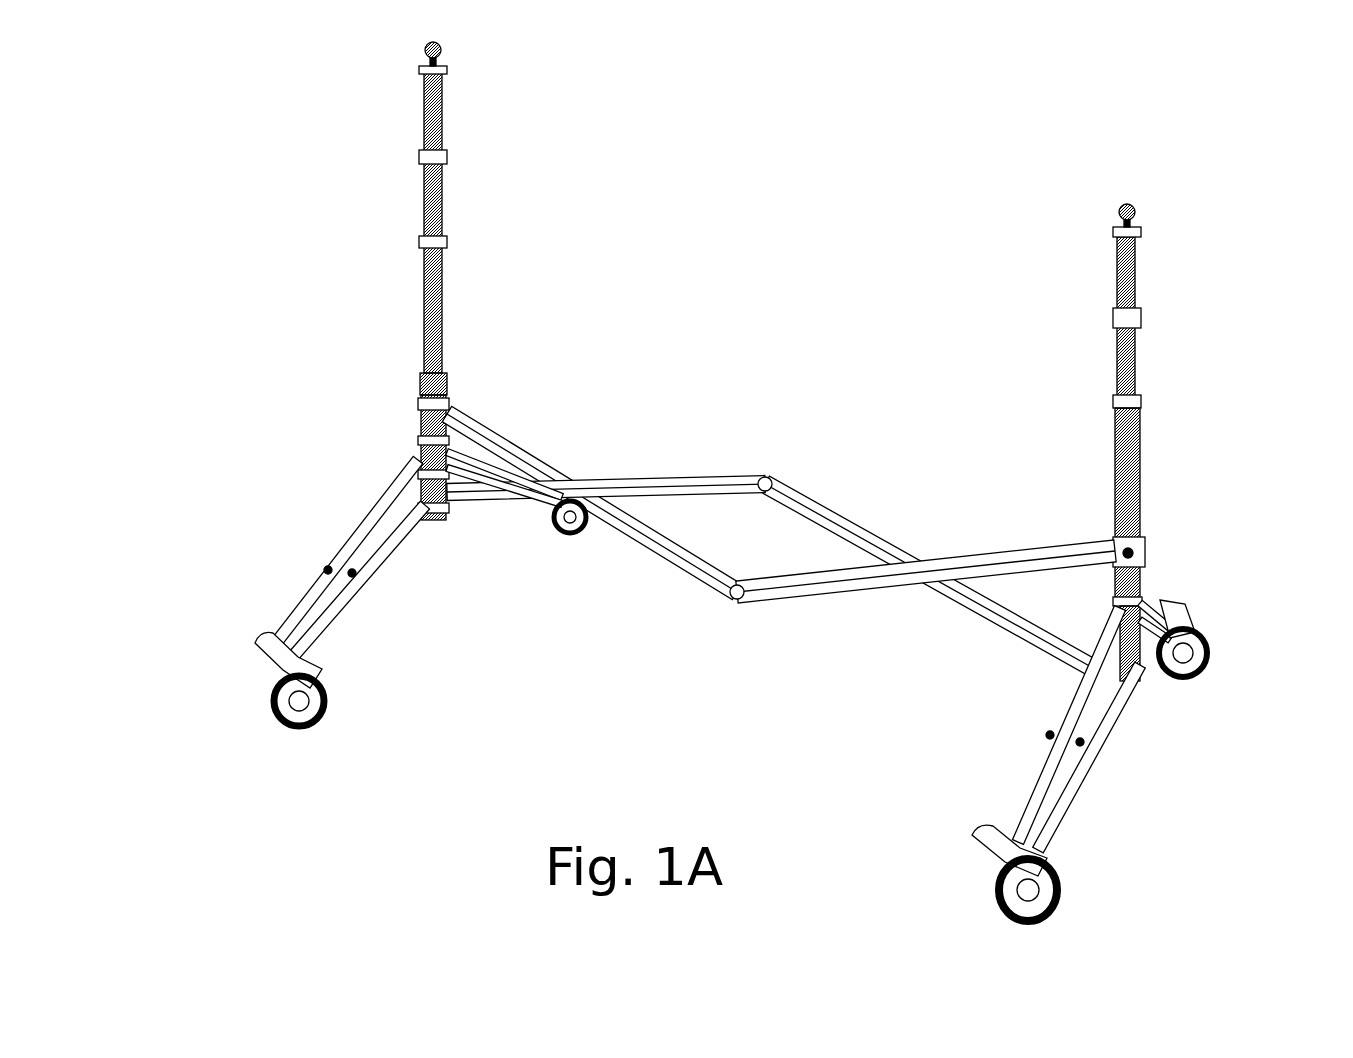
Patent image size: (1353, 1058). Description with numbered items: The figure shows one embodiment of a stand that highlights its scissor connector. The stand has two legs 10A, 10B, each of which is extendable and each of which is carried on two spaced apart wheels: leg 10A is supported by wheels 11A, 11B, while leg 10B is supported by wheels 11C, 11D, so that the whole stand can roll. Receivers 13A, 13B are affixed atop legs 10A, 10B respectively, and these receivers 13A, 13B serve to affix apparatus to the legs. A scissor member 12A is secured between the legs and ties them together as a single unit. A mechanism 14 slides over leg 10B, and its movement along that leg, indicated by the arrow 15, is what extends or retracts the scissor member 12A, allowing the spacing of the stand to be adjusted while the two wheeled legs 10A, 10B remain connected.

The leg 10A is at (385, 348).
The leg 10B is at (1086, 352).
The wheel 11A is at (268, 680).
The wheel 11B is at (567, 540).
The wheel 11C is at (1210, 658).
The wheel 11D is at (1075, 905).
The scissor member 12A is at (733, 600).
The receiver 13A is at (416, 50).
The receiver 13B is at (1125, 193).
The mechanism 14 is at (1110, 538).
The arrow 15 is at (1193, 282).